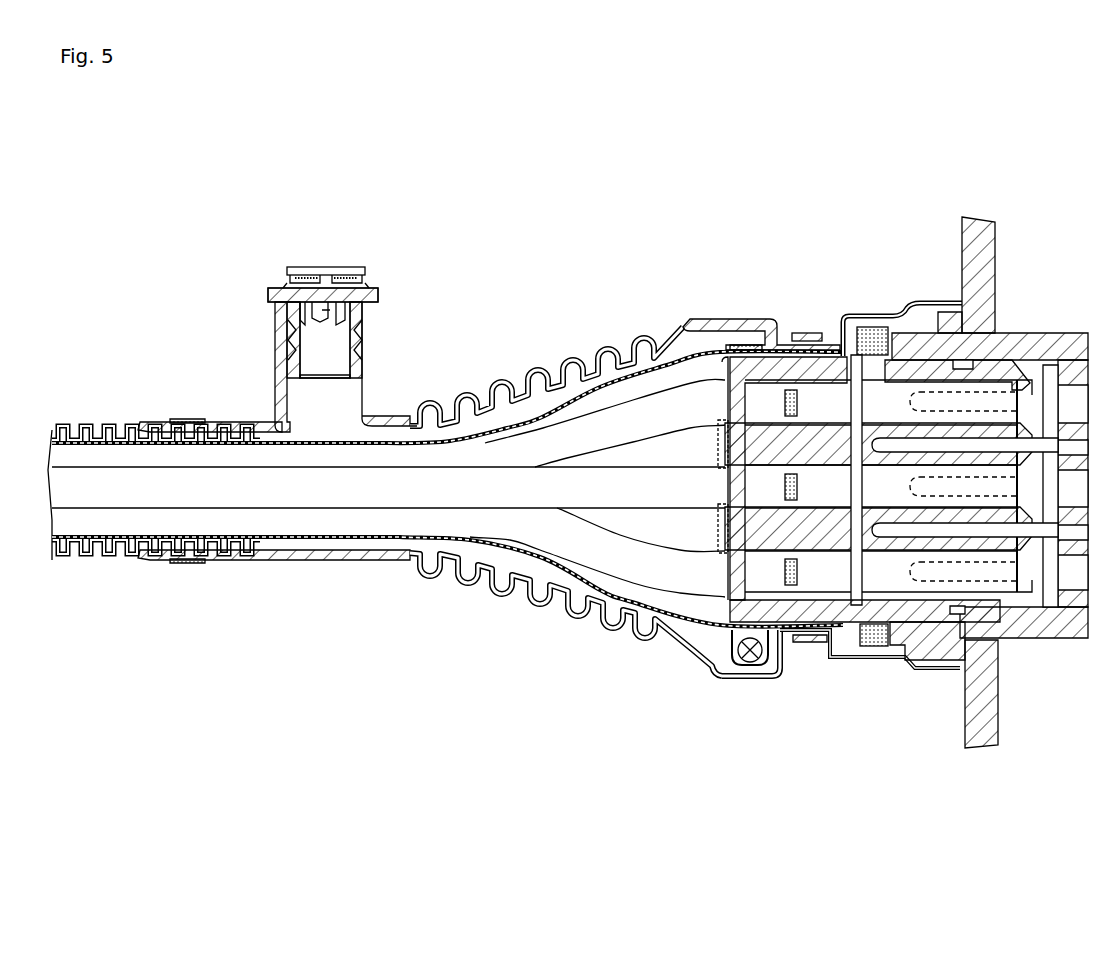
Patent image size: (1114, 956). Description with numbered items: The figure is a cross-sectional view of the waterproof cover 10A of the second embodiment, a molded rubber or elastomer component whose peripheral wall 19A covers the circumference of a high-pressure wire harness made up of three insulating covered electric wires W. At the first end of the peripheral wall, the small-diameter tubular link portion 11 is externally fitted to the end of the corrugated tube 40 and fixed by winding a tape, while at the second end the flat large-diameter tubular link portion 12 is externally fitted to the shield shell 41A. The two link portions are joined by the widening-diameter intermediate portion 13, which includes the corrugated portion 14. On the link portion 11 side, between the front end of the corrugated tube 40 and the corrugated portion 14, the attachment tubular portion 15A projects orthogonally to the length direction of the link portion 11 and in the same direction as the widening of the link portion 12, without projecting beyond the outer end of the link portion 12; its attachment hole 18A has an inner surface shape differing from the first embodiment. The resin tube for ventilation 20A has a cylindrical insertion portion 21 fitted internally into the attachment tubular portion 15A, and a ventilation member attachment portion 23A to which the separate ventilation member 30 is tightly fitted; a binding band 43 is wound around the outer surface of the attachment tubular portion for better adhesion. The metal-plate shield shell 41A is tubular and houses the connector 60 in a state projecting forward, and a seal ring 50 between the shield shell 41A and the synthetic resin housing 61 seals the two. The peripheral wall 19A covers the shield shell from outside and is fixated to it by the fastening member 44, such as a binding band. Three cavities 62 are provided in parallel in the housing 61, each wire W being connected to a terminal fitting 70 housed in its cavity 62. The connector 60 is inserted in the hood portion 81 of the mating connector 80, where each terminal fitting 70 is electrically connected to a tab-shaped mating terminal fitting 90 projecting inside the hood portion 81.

The corrugated tube 40 is at (95, 405).
The insulating covered electric wire W is at (680, 398).
The link portion 11 is at (147, 414).
The peripheral wall 19A is at (330, 562).
The attachment tubular portion 15A is at (280, 378).
The attachment hole 18A is at (362, 386).
The ventilation member attachment portion 23A is at (278, 300).
The insertion portion 21 is at (290, 328).
The binding band 43 is at (372, 342).
The ventilation member 30 is at (329, 234).
The resin tube for ventilation 20A is at (404, 281).
The intermediate portion 13 is at (602, 344).
The waterproof cover 10A is at (544, 306).
The corrugated portion 14 is at (549, 614).
The link portion 12 is at (742, 320).
The cavity 62 is at (836, 344).
The seal ring 50 is at (872, 330).
The shield shell 41A is at (905, 286).
The hood portion 81 is at (925, 345).
The mating terminal fitting 90 is at (985, 395).
The mating connector 80 is at (1066, 333).
The terminal fitting 70 is at (977, 400).
The fastening member 44 is at (808, 642).
The connector 60 is at (903, 624).
The housing 61 is at (936, 610).